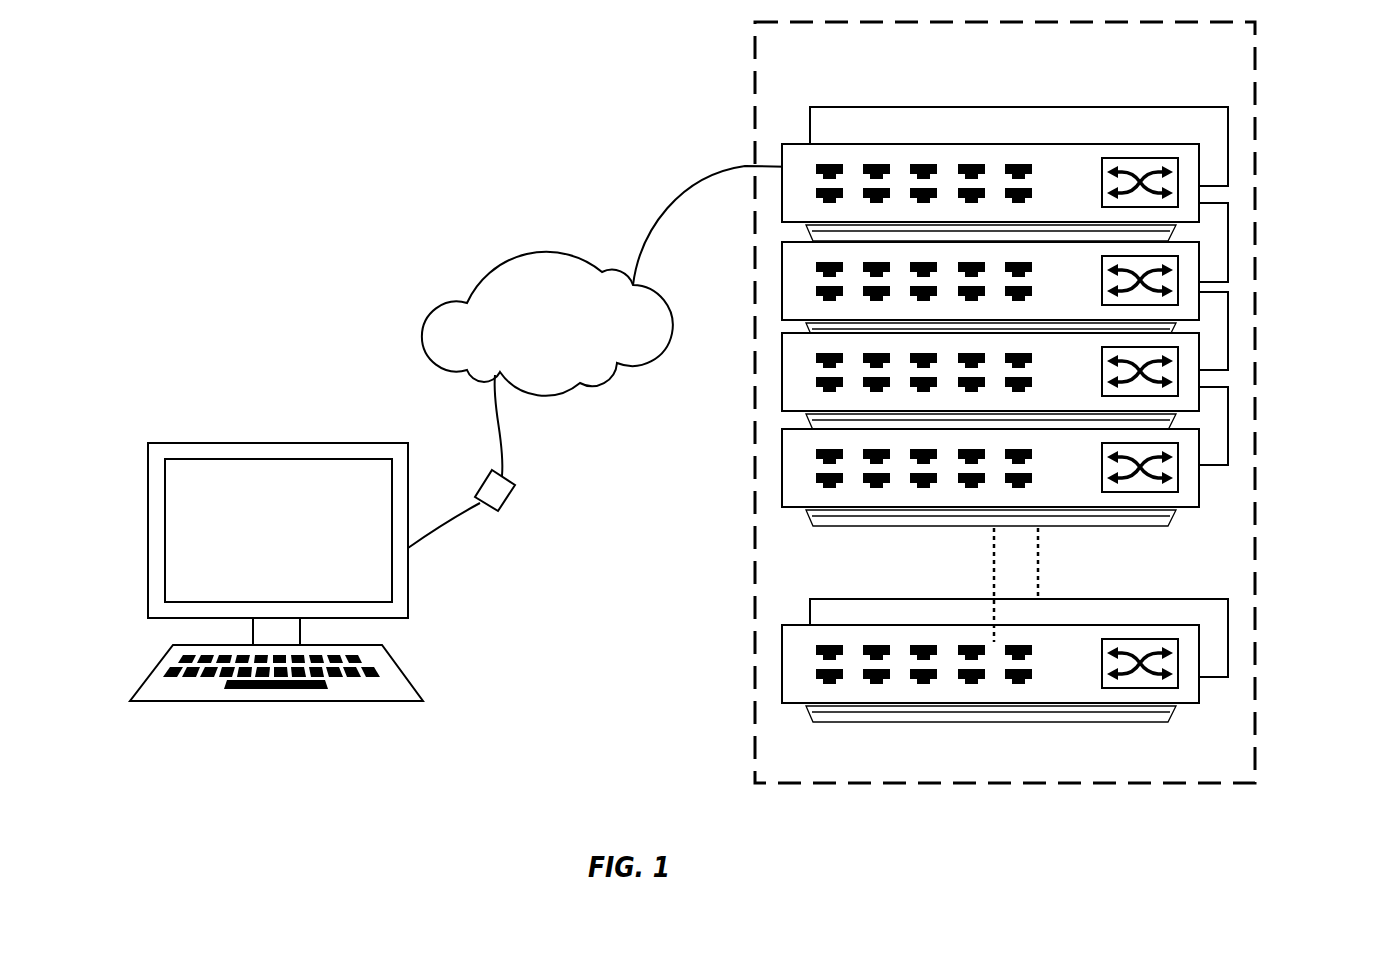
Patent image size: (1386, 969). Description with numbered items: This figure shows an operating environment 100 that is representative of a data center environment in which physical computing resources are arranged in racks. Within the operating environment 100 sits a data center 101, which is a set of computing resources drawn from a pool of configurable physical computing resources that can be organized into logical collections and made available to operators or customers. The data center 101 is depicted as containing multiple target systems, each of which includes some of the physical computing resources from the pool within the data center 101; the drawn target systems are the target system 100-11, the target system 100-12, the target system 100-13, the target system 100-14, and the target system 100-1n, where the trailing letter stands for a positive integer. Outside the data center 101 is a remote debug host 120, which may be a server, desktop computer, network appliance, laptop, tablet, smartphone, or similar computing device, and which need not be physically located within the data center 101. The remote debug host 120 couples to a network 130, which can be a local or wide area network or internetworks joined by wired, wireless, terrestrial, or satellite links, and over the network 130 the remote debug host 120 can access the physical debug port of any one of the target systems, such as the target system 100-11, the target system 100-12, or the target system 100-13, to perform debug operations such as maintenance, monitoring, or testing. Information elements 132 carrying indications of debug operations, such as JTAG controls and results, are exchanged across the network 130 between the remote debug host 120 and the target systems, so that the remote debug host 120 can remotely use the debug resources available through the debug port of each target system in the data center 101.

The operating environment 100 is at (277, 157).
The data center 101 is at (1082, 79).
The target system 100-11 is at (1338, 143).
The target system 100-12 is at (796, 262).
The target system 100-13 is at (799, 365).
The target system 100-14 is at (800, 455).
The target system 100-1n is at (798, 647).
The remote debug host 120 is at (294, 413).
The network 130 is at (565, 345).
The information elements 132 is at (493, 490).